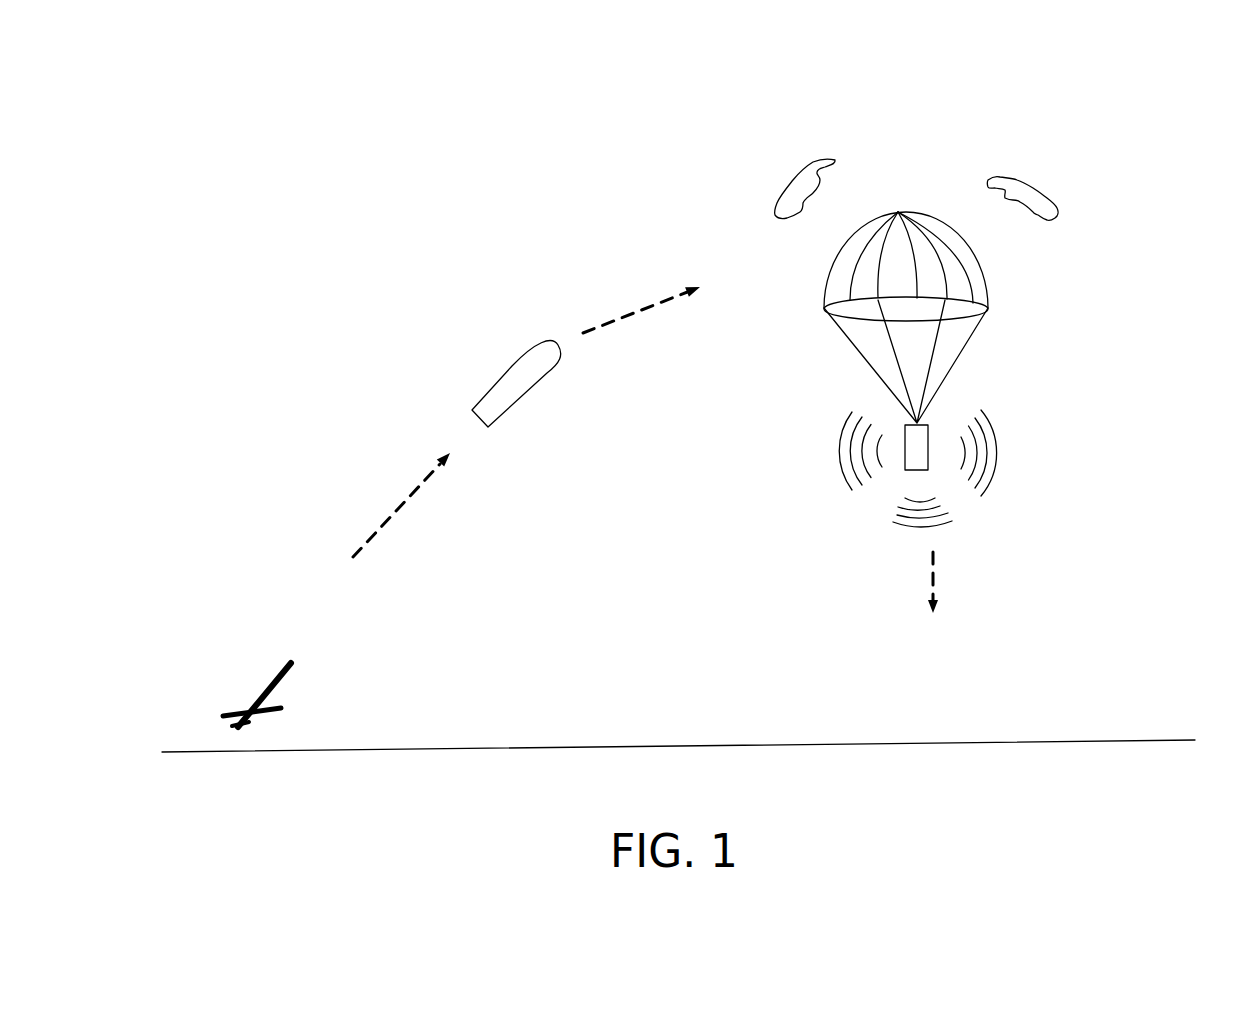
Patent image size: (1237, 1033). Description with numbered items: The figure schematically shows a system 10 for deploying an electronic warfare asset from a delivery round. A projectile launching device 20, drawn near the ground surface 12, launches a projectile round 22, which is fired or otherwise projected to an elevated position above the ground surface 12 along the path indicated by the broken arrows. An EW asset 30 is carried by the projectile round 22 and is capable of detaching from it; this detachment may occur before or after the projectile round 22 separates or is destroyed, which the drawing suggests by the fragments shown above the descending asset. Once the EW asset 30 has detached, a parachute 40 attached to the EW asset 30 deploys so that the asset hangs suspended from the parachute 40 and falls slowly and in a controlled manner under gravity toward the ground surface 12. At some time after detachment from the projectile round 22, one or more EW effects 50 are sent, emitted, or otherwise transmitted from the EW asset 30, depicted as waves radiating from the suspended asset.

The system for deployment of an EW asset from a delivery round 10 is at (330, 140).
The ground surface 12 is at (1067, 740).
The projectile launching device 20 is at (252, 695).
The projectile round 22 is at (508, 372).
The EW asset 30 is at (950, 418).
The parachute 40 is at (977, 265).
The EW effects 50 is at (958, 514).